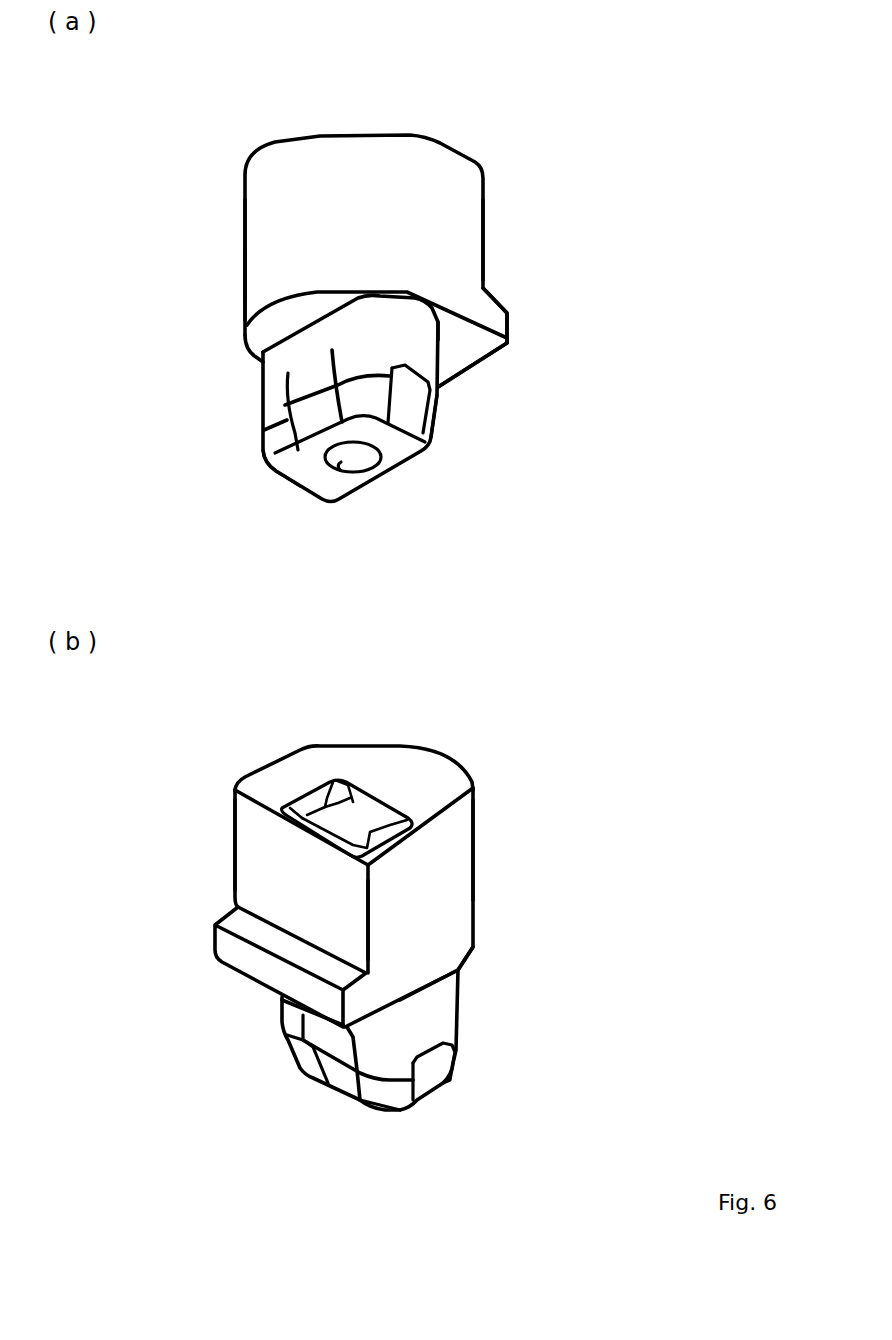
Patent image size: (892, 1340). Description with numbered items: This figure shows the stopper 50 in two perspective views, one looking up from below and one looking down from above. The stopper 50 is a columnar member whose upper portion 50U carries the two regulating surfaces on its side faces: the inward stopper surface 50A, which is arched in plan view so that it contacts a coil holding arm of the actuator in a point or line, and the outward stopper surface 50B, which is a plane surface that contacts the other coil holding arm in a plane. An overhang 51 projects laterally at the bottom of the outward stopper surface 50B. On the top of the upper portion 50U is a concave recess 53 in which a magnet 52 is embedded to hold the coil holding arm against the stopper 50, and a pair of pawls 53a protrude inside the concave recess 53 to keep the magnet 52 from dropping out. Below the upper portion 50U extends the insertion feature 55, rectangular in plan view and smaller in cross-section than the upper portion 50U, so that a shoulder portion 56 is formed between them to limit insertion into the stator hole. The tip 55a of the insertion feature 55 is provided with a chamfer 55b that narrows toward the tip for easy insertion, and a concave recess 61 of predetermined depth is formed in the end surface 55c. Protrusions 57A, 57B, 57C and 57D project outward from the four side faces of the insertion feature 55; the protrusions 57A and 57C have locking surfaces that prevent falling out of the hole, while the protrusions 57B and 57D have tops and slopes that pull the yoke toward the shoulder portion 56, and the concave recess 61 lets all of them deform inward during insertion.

The stopper 50 is at (382, 135).
The inward stopper surface 50A is at (263, 223).
The outward stopper surface 50B is at (487, 230).
The upper portion 50U is at (264, 263).
The overhang 51 is at (510, 317).
The magnet 52 is at (343, 820).
The concave recess 53 is at (387, 800).
The pawls 53a is at (305, 797).
The insertion feature 55 is at (273, 380).
The tip 55a is at (393, 447).
The chamfer 55b is at (428, 428).
The end surface 55c is at (300, 468).
The shoulder portion 56 is at (460, 350).
The protrusion 57A is at (405, 402).
The protrusion 57B is at (340, 1072).
The protrusion 57C is at (432, 1078).
The protrusion 57D is at (270, 445).
The concave recess 61 is at (335, 466).